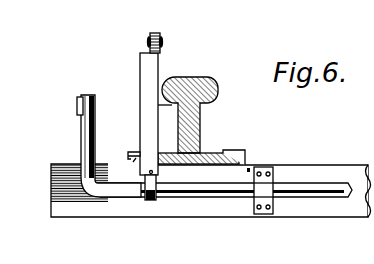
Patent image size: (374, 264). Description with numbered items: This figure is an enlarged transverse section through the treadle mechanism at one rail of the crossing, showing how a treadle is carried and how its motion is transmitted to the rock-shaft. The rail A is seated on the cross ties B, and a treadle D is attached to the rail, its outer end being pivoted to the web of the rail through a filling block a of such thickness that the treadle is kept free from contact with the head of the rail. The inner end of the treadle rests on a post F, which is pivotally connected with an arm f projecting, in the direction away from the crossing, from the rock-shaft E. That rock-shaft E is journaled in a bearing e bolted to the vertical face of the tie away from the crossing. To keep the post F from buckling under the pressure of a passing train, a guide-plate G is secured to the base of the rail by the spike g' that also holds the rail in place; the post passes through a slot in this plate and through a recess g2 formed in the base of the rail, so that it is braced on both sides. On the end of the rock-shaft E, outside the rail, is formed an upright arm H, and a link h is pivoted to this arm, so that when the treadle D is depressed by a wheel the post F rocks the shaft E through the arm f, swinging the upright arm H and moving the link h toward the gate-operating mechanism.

The cross ties B is at (211, 190).
The rock-shaft E is at (217, 185).
The upright arm H is at (81, 135).
The link h is at (77, 105).
The spike g' is at (245, 152).
The rail A is at (193, 115).
The post F is at (149, 114).
The filling block a is at (165, 119).
The treadle D is at (154, 33).
The arm f is at (159, 176).
The guide-plate G is at (128, 153).
The recess g2 is at (129, 168).
The bearing e is at (260, 190).